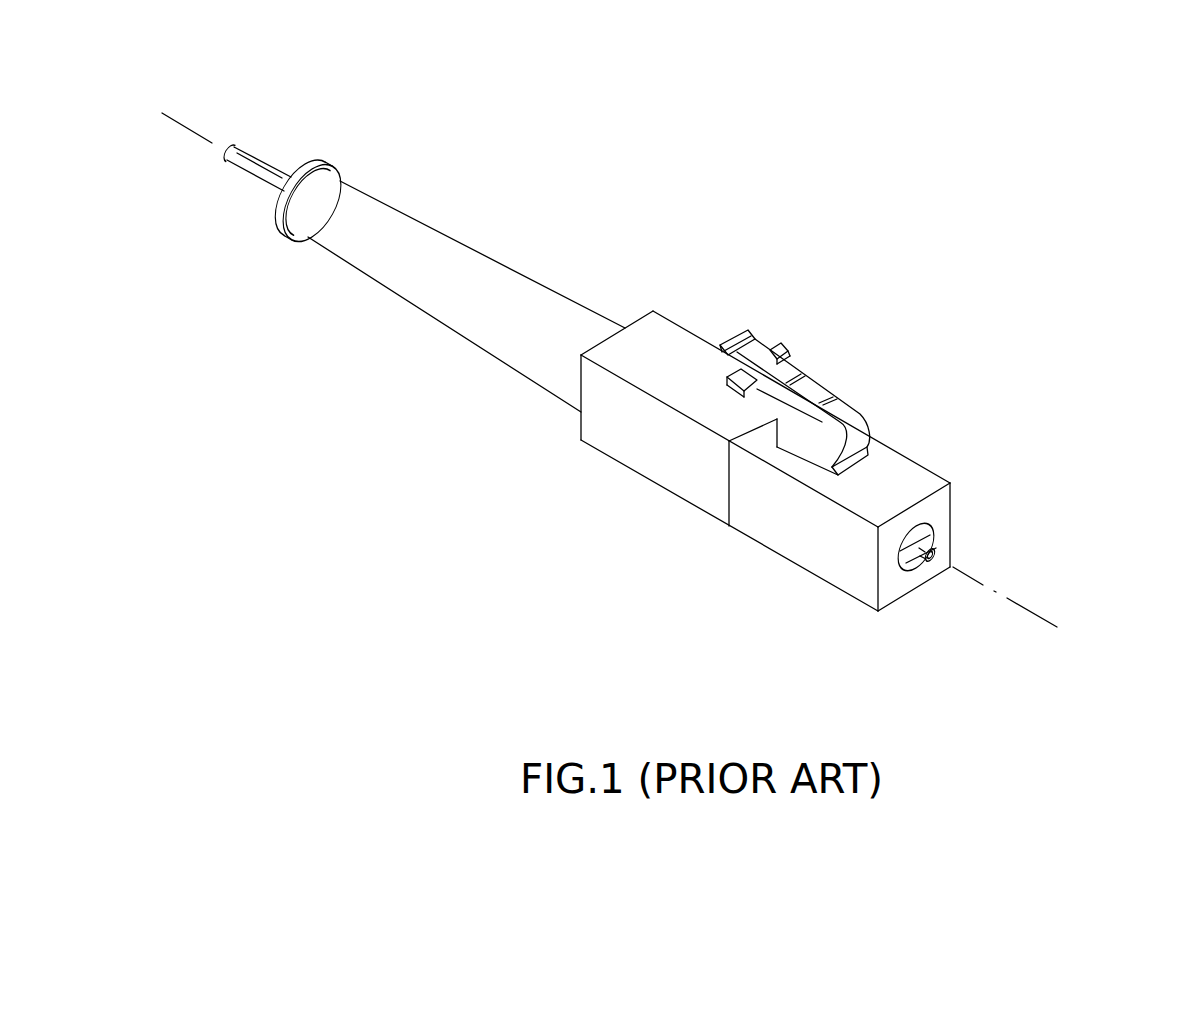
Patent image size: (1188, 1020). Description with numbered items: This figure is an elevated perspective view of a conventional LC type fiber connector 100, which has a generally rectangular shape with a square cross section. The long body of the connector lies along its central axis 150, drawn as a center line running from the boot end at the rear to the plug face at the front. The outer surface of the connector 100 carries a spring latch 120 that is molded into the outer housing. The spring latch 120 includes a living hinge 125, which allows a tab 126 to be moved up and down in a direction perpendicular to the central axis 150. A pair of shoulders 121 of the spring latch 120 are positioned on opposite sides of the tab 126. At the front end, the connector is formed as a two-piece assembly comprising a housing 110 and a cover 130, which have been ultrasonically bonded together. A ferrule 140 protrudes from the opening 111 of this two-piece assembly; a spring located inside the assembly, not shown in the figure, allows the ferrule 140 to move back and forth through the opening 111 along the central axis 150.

The LC type fiber connector 100 is at (878, 290).
The housing 110 is at (818, 548).
The opening 111 is at (929, 530).
The spring latch 120 is at (750, 347).
The shoulders 121 is at (783, 353).
The living hinge 125 is at (778, 422).
The tab 126 is at (728, 362).
The cover 130 is at (935, 521).
The ferrule 140 is at (924, 563).
The central axis 150 is at (184, 125).